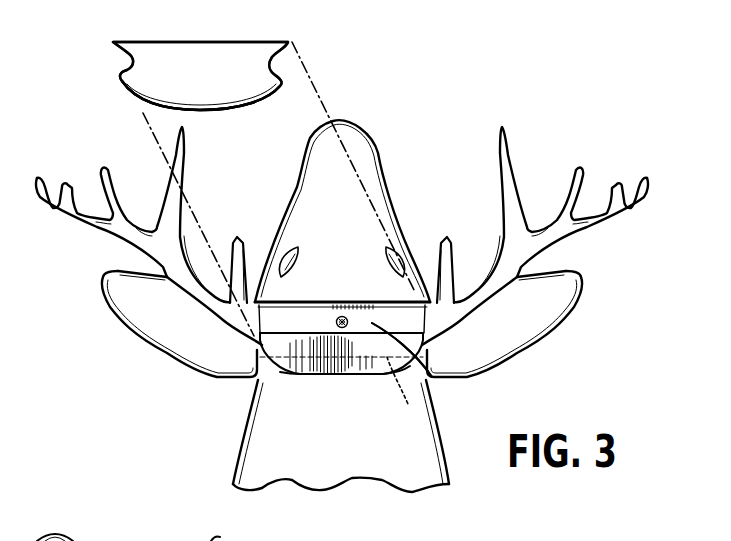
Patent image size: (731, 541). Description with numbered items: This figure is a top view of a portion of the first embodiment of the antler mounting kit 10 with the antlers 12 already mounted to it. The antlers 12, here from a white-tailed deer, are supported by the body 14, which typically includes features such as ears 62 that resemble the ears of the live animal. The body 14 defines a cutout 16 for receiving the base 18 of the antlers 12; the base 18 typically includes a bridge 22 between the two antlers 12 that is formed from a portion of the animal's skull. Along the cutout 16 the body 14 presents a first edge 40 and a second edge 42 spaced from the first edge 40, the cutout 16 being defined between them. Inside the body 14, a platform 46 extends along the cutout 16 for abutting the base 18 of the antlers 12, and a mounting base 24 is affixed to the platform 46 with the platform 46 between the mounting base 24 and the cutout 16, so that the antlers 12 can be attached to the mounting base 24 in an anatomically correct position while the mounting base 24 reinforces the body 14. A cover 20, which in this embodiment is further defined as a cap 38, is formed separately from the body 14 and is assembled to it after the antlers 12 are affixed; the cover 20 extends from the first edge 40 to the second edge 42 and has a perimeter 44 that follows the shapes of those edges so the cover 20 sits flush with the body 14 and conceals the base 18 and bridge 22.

The antler mounting kit 10 is at (342, 267).
The antlers 12 is at (88, 224).
The body 14 is at (232, 458).
The cutout 16 is at (301, 339).
The base 18 is at (432, 377).
The bridge 22 is at (445, 368).
The cover 20 is at (168, 72).
The cap 38 is at (170, 77).
The mounting base 24 is at (404, 394).
The first edge 40 is at (342, 302).
The second edge 42 is at (333, 373).
The perimeter 44 is at (203, 113).
The platform 46 is at (383, 356).
The ears 62 is at (135, 313).